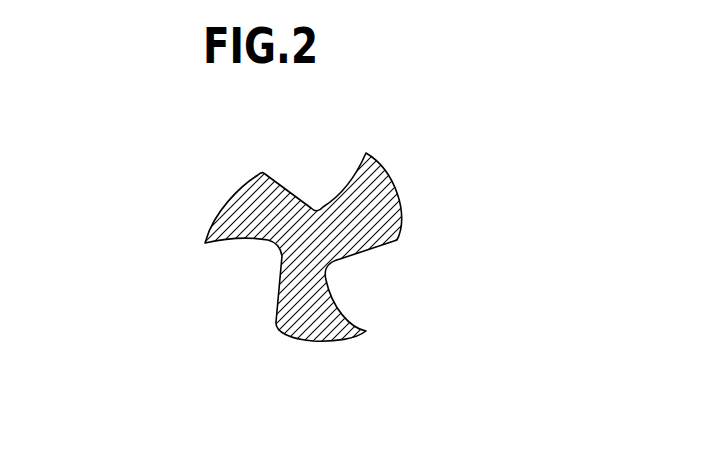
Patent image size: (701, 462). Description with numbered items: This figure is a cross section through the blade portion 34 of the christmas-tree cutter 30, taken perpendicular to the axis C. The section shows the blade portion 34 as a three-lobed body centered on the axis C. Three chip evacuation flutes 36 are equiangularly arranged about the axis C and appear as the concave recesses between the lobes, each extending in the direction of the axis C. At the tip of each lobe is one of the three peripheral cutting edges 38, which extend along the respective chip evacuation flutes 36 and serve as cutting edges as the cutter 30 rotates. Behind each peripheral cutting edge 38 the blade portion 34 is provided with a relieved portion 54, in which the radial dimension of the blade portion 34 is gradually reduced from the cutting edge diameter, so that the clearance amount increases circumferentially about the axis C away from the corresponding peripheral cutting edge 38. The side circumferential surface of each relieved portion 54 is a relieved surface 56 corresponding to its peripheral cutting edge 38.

The christmas-tree cutter 30 is at (397, 112).
The blade portion 34 is at (428, 303).
The chip evacuation flutes 36 is at (345, 187).
The peripheral cutting edges 38 is at (365, 152).
The relieved portions 54 is at (218, 198).
The relieved surfaces 56 is at (305, 247).
The axis C is at (310, 241).